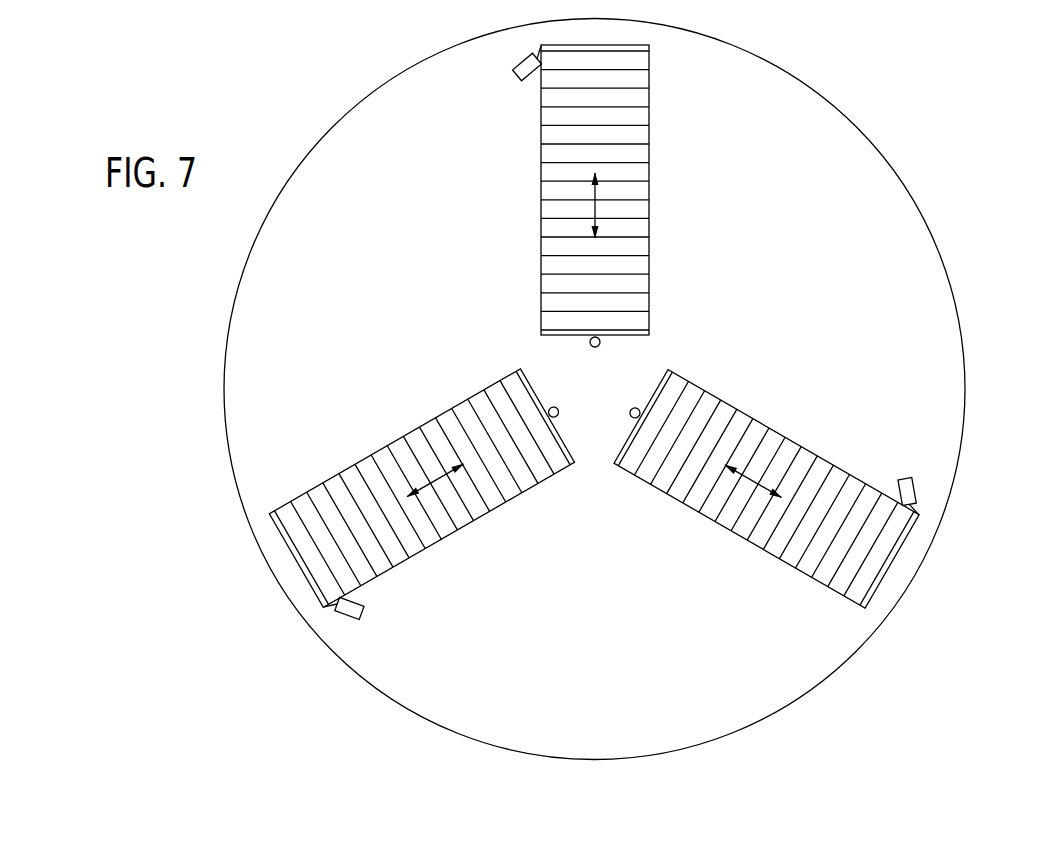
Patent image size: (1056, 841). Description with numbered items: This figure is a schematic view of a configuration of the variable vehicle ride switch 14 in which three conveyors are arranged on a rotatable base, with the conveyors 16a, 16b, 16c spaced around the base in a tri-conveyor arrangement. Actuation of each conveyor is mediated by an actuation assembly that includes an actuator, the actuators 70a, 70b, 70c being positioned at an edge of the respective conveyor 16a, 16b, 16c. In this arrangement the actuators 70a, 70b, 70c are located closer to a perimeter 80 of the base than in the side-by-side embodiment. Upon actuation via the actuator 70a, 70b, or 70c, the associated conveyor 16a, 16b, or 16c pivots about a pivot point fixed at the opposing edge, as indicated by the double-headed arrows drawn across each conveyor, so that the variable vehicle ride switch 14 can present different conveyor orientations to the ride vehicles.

The variable vehicle ride switch 14 is at (270, 98).
The conveyor 16a is at (650, 320).
The conveyor 16b is at (413, 435).
The conveyor 16c is at (772, 553).
The actuator arm 70a is at (516, 77).
The actuator arm 70b is at (352, 620).
The actuator 70c is at (915, 489).
The perimeter 80 is at (225, 390).